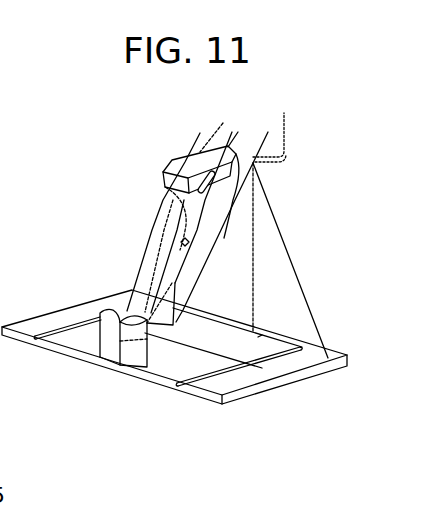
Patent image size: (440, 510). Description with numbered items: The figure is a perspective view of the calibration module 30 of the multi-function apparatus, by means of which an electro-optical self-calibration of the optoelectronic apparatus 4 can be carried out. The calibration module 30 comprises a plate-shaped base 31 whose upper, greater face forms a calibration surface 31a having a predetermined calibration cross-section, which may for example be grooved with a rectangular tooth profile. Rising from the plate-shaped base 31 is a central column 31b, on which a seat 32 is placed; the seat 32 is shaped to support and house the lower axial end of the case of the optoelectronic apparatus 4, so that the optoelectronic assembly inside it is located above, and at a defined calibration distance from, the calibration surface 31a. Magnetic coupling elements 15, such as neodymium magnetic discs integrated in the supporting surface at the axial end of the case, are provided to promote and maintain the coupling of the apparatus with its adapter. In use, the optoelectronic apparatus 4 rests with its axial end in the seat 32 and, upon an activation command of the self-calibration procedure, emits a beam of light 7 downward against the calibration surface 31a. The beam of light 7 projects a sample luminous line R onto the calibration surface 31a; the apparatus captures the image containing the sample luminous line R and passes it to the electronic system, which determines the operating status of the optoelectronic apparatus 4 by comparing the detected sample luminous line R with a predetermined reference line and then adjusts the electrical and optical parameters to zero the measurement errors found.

The optoelectronic apparatus 4 is at (293, 133).
The beam of light 7 is at (253, 243).
The magnetic coupling elements 15 is at (133, 348).
The calibration module 30 is at (217, 333).
The plate-shaped base 31 is at (347, 349).
The calibration surface 31a is at (226, 365).
The central column 31b is at (110, 340).
The seat 32 is at (100, 330).
The sample luminous line R is at (258, 337).